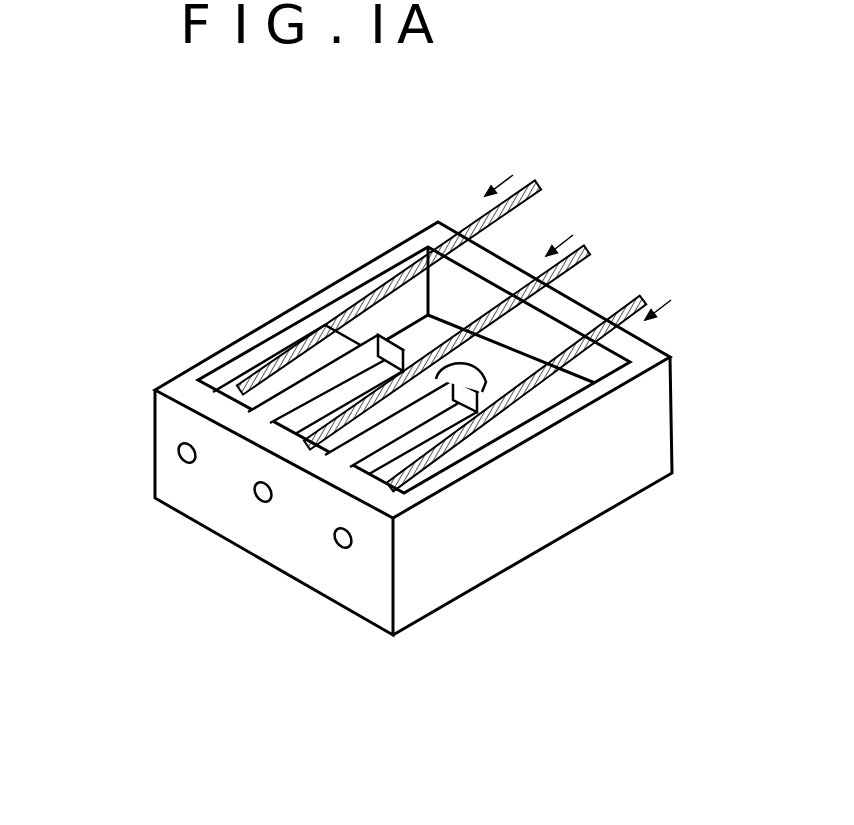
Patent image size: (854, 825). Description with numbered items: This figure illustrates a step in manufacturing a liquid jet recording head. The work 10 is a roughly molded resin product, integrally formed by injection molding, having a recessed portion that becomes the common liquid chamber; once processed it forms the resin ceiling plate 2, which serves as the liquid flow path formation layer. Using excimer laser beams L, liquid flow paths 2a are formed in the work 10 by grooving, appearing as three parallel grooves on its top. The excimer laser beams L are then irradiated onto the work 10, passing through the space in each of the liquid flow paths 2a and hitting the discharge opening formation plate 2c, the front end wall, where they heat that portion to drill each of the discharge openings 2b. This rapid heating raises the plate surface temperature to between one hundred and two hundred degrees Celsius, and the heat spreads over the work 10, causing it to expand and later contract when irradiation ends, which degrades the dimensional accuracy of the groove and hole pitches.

The work 10 is at (361, 472).
The resin ceiling plate 2 is at (135, 378).
The liquid flow paths 2a is at (303, 327).
The discharge openings 2b is at (183, 463).
The discharge opening formation plate 2c is at (367, 598).
The excimer laser beams L is at (540, 184).